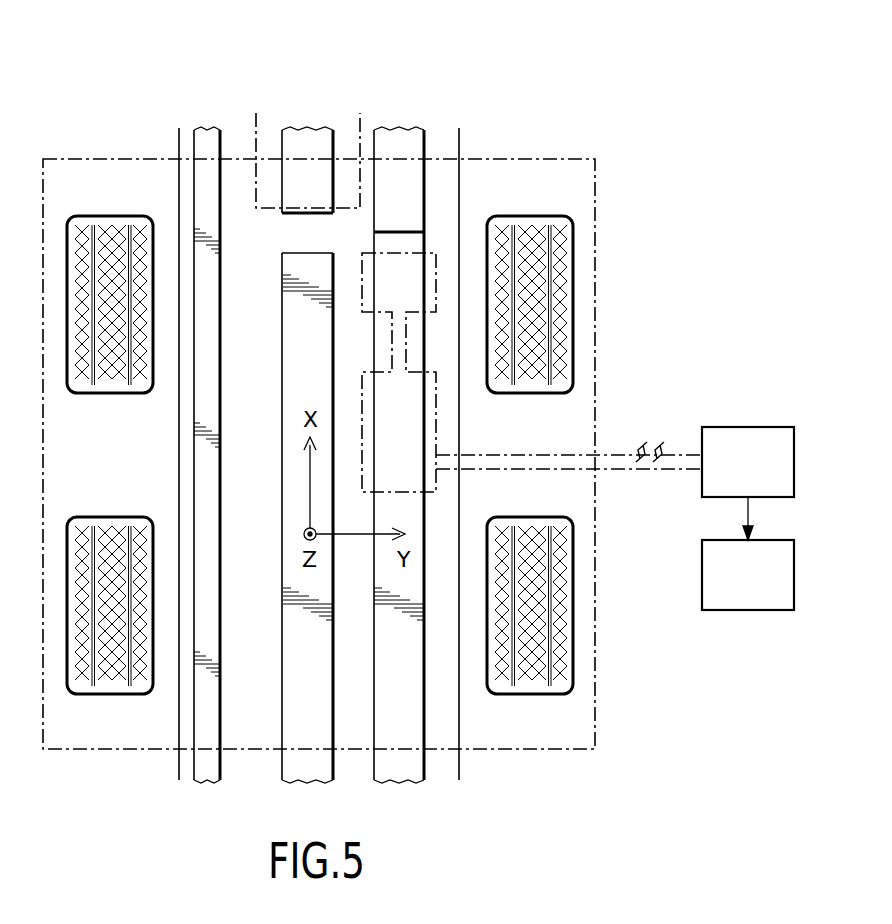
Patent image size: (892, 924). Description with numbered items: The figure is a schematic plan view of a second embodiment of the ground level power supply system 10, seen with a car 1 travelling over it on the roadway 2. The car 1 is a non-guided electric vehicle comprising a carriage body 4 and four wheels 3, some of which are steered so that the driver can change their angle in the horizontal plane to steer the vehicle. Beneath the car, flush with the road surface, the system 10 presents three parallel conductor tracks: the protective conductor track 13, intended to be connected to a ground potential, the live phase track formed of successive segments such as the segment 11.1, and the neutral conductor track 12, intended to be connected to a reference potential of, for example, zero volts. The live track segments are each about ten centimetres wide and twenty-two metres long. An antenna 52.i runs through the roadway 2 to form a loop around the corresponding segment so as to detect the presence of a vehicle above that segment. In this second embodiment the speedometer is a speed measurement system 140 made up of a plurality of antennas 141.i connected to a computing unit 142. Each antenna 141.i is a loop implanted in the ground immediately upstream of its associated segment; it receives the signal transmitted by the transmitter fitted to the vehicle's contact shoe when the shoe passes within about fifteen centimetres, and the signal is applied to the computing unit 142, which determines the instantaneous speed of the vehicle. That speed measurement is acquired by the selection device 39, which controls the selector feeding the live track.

The car 1 is at (475, 430).
The roadway 2 is at (319, 430).
The wheels 3 is at (77, 311).
The carriage body 4 is at (597, 525).
The ground level power supply system 10 is at (427, 53).
The segment of the live track 11.1 is at (303, 135).
The neutral conductor track 12 is at (393, 135).
The protective conductor track 13 is at (206, 135).
The selection device 39 is at (740, 600).
The antenna 52.i is at (257, 208).
The speed measurement system 140 is at (761, 357).
The antenna 141.i is at (617, 446).
The computing unit 142 is at (741, 437).